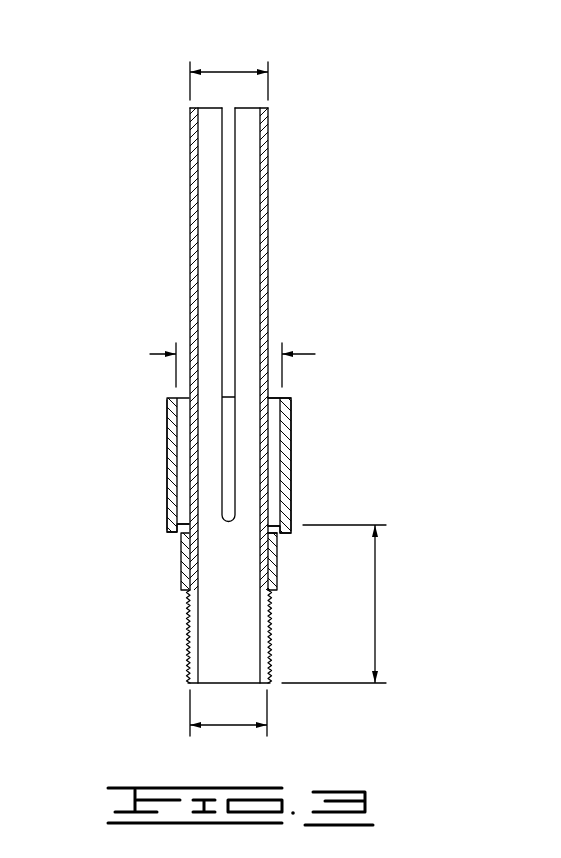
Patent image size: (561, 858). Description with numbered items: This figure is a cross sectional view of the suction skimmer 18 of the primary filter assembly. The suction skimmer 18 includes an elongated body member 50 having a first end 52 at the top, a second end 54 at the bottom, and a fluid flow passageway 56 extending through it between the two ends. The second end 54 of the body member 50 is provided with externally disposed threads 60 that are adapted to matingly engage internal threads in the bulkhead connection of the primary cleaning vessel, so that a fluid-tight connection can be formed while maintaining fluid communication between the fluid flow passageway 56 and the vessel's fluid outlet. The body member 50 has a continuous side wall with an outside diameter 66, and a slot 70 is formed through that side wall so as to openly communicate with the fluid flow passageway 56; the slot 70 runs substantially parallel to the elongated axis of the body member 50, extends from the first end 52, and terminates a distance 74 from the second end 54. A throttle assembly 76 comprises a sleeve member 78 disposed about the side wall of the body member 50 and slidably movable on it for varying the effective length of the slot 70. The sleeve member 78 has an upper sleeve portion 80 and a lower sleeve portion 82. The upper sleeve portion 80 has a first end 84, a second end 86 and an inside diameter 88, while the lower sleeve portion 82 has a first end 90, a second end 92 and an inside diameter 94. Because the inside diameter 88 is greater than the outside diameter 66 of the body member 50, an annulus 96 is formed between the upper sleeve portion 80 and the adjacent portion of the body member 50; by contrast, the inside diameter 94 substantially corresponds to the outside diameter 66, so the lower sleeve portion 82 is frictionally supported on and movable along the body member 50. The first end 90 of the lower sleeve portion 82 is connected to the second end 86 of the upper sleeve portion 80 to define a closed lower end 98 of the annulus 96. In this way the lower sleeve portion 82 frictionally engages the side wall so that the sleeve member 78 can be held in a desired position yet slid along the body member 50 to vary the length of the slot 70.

The suction skimmer 18 is at (243, 398).
The elongated body member 50 is at (238, 386).
The first end 52 is at (270, 113).
The second end 54 is at (270, 664).
The fluid flow passageway 56 is at (248, 183).
The externally disposed threads 60 is at (271, 631).
The outside diameter 66 is at (227, 72).
The slot 70 is at (228, 200).
The distance 74 is at (375, 603).
The throttle assembly 76 is at (123, 467).
The sleeve member 78 is at (334, 443).
The upper sleeve portion 80 is at (291, 415).
The lower sleeve portion 82 is at (184, 563).
The first end 84 is at (170, 410).
The second end 86 is at (168, 521).
The inside diameter 88 is at (153, 354).
The first end 90 is at (278, 537).
The second end 92 is at (305, 568).
The inside diameter 94 is at (224, 725).
The annulus 96 is at (283, 440).
The closed lower end 98 is at (278, 523).